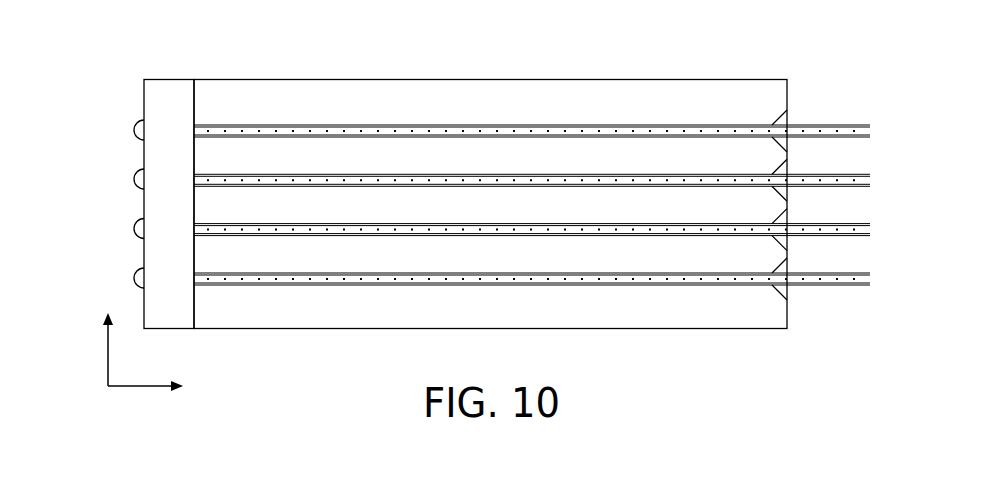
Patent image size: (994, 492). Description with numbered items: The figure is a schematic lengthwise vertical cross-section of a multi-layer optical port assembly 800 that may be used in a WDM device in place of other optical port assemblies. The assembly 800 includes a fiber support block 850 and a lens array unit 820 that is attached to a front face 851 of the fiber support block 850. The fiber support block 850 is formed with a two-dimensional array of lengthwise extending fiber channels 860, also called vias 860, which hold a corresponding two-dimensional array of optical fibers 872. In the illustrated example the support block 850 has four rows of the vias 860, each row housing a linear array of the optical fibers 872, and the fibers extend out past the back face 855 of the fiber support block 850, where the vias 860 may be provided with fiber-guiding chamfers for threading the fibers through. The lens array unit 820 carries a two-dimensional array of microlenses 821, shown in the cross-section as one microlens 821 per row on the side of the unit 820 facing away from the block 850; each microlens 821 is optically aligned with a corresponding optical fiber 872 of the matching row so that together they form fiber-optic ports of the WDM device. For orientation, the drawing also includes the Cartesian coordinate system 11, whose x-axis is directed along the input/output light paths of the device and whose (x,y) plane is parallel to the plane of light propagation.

The multi-layer optical port assembly 800 is at (512, 41).
The fiber support block 850 is at (523, 80).
The lens array unit 820 is at (177, 79).
The microlenses 821 is at (134, 126).
The front face of fiber support block 851 is at (195, 92).
The back face of fiber support block 855 is at (790, 98).
The fiber channels (vias) 860 is at (568, 125).
The optical fibers 872 is at (818, 126).
The Cartesian coordinate system 11 is at (91, 383).